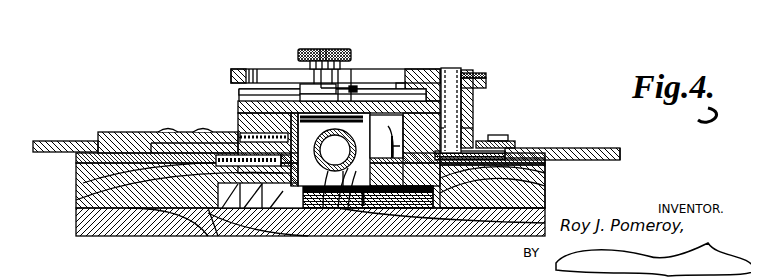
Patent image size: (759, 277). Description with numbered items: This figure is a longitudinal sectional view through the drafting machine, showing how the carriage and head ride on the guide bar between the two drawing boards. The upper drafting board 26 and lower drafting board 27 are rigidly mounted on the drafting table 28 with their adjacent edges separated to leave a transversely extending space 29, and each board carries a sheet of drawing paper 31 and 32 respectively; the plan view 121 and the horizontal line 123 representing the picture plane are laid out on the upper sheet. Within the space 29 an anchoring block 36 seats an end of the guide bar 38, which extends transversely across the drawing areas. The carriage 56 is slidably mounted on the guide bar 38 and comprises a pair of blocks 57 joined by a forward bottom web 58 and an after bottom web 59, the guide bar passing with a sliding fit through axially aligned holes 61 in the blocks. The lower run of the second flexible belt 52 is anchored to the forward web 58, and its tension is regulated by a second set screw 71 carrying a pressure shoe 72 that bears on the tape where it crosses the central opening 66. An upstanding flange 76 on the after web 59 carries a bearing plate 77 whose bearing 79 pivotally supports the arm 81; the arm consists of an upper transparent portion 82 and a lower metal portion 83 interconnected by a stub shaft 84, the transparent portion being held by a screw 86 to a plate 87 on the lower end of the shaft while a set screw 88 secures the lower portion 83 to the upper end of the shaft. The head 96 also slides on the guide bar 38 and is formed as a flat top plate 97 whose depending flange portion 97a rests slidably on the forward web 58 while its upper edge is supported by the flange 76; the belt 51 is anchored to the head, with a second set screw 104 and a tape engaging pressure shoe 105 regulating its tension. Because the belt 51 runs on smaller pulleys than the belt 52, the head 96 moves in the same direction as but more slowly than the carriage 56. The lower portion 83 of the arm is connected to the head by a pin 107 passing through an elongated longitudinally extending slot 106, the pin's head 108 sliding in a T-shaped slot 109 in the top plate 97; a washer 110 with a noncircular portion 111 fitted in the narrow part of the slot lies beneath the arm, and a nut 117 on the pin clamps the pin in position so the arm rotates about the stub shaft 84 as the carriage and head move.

The upper drafting board 26 is at (72, 188).
The lower drafting board 27 is at (520, 192).
The drafting table 28 is at (68, 219).
The transversely extending space 29 is at (280, 197).
The sheet of drawing paper 31 is at (68, 150).
The sheet of drawing paper 32 is at (537, 153).
The anchoring block 36 is at (370, 188).
The guide bar 38 is at (330, 163).
The belt 51 is at (403, 149).
The second flexible belt 52 is at (379, 145).
The carriage 56 is at (385, 200).
The blocks 57 is at (305, 178).
The forward bottom web 58 is at (235, 185).
The after bottom web 59 is at (420, 200).
The axially aligned holes 61 is at (336, 165).
The central opening 66 is at (290, 170).
The second set screw 71 is at (207, 225).
The pressure shoe 72 is at (248, 160).
The upstanding flange 76 is at (453, 112).
The bearing plate 77 is at (435, 122).
The bearing 79 is at (456, 120).
The arm 81 is at (553, 141).
The upper transparent portion 82 is at (602, 140).
The lower metal portion 83 is at (440, 61).
The stub shaft 84 is at (458, 62).
The screw 86 is at (500, 128).
The plate 87 is at (537, 172).
The set screw 88 is at (478, 69).
The head 96 is at (235, 96).
The flat top plate 97 is at (388, 66).
The depending flange portion 97a is at (183, 226).
The second set screw 104 is at (232, 127).
The tape engaging pressure shoe 105 is at (313, 118).
The elongated longitudinally extending slot 106 is at (375, 92).
The pin 107 is at (316, 41).
The head 108 is at (344, 73).
The T-shaped slot 109 is at (250, 92).
The washer 110 is at (293, 77).
The noncircular portion 111 is at (346, 88).
The nut 117 is at (336, 61).
The plan view 121 is at (40, 133).
The horizontal line 123 is at (192, 124).